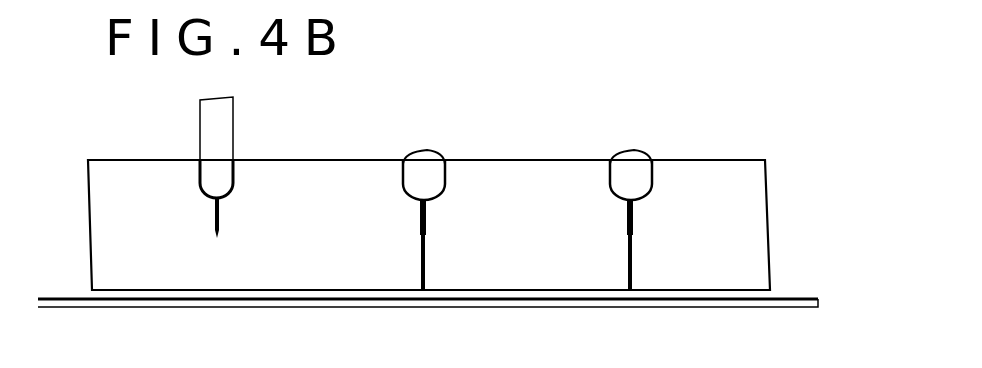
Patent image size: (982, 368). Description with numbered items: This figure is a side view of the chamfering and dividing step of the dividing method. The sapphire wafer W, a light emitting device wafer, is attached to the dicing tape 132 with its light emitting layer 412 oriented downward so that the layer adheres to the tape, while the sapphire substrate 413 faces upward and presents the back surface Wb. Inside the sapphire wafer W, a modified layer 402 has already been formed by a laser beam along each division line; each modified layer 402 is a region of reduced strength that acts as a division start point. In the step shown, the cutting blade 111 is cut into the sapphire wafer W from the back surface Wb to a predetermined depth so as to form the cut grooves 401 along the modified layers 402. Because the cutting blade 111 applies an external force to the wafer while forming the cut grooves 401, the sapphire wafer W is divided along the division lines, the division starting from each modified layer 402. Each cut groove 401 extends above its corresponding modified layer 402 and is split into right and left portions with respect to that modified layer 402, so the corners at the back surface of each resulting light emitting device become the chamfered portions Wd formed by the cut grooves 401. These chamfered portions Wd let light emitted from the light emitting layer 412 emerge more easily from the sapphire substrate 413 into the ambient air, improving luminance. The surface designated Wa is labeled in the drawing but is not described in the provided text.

The cutting blade 111 is at (202, 123).
The cut groove 401 is at (205, 182).
The modified layer 402 is at (219, 219).
The sapphire substrate 413 is at (762, 213).
The light emitting layer 412 is at (717, 301).
The dicing tape 132 is at (797, 300).
The sapphire wafer W is at (748, 140).
The back surface of wafer Wa is at (546, 308).
The back surface Wb is at (546, 160).
The chamfered portion Wd is at (427, 151).